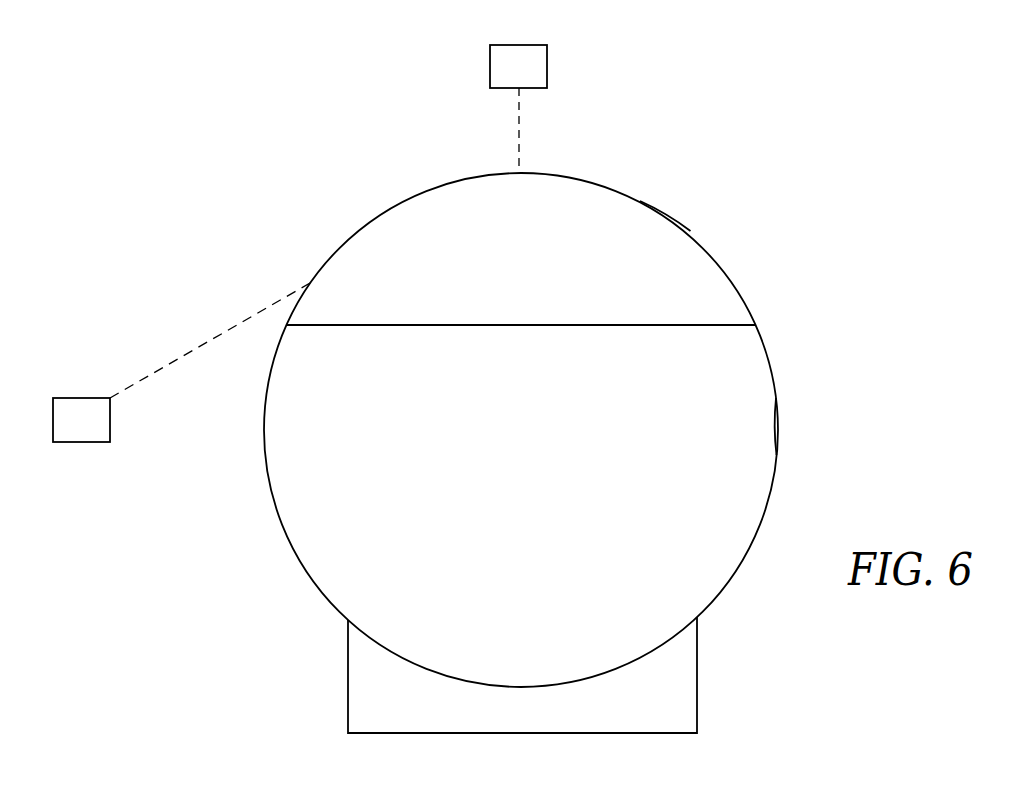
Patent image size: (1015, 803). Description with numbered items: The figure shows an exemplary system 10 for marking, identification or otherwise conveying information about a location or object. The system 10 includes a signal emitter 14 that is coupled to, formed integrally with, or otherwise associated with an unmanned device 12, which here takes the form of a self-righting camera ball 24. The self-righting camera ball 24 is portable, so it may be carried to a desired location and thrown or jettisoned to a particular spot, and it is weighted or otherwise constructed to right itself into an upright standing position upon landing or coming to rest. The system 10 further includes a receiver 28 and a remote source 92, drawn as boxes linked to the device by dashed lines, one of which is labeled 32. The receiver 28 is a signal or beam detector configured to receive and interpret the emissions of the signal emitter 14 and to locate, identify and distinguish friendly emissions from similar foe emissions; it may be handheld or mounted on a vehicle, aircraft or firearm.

The system 10 is at (481, 453).
The unmanned device 12 is at (780, 337).
The signal emitter 14 is at (693, 231).
The self-righting camera ball 24 is at (777, 398).
The receiver 28 is at (94, 432).
The communication link 32 is at (207, 345).
The remote source 92 is at (506, 79).